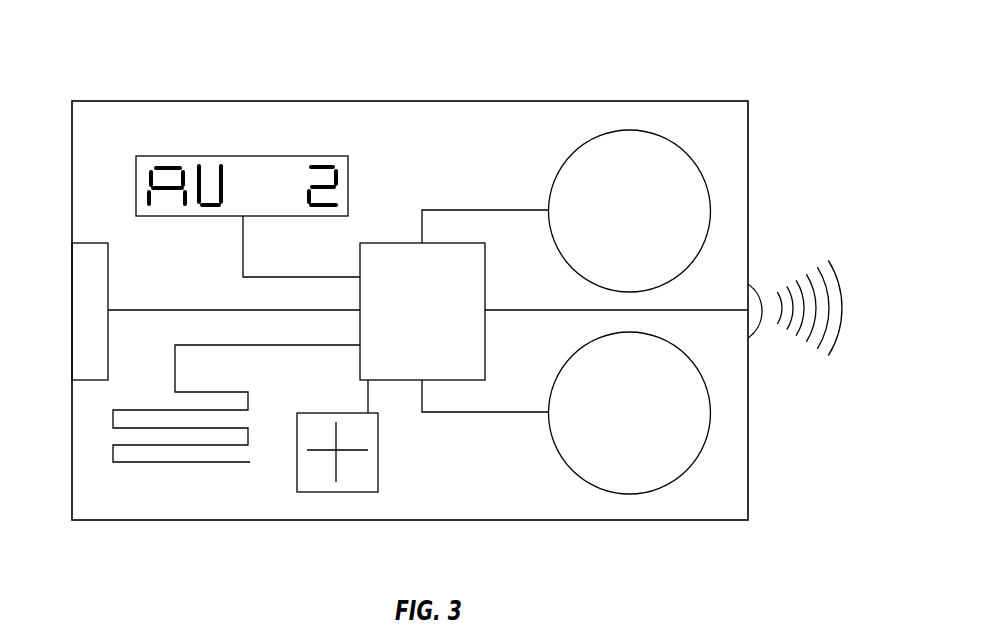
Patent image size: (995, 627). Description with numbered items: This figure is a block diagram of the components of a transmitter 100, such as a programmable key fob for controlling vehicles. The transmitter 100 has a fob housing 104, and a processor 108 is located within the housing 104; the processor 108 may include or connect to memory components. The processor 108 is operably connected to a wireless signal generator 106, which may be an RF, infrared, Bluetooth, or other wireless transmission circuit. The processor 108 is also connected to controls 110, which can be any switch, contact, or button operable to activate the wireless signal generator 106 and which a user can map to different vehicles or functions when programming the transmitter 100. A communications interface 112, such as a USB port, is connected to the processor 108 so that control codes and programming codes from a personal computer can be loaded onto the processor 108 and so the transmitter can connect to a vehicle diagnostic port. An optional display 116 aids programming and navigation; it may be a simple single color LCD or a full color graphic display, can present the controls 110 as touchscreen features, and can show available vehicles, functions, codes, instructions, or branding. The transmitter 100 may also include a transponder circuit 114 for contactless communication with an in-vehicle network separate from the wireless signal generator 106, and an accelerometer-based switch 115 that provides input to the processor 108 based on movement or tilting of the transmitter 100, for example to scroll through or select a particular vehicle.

The transmitter 100 is at (736, 62).
The fob housing 104 is at (115, 101).
The wireless signal generator 106 is at (761, 318).
The processor 108 is at (441, 324).
The controls 110 is at (710, 210).
The communications interface 112 is at (92, 311).
The transponder circuit 114 is at (185, 462).
The accelerometer-based switch 115 is at (325, 492).
The display 116 is at (277, 156).